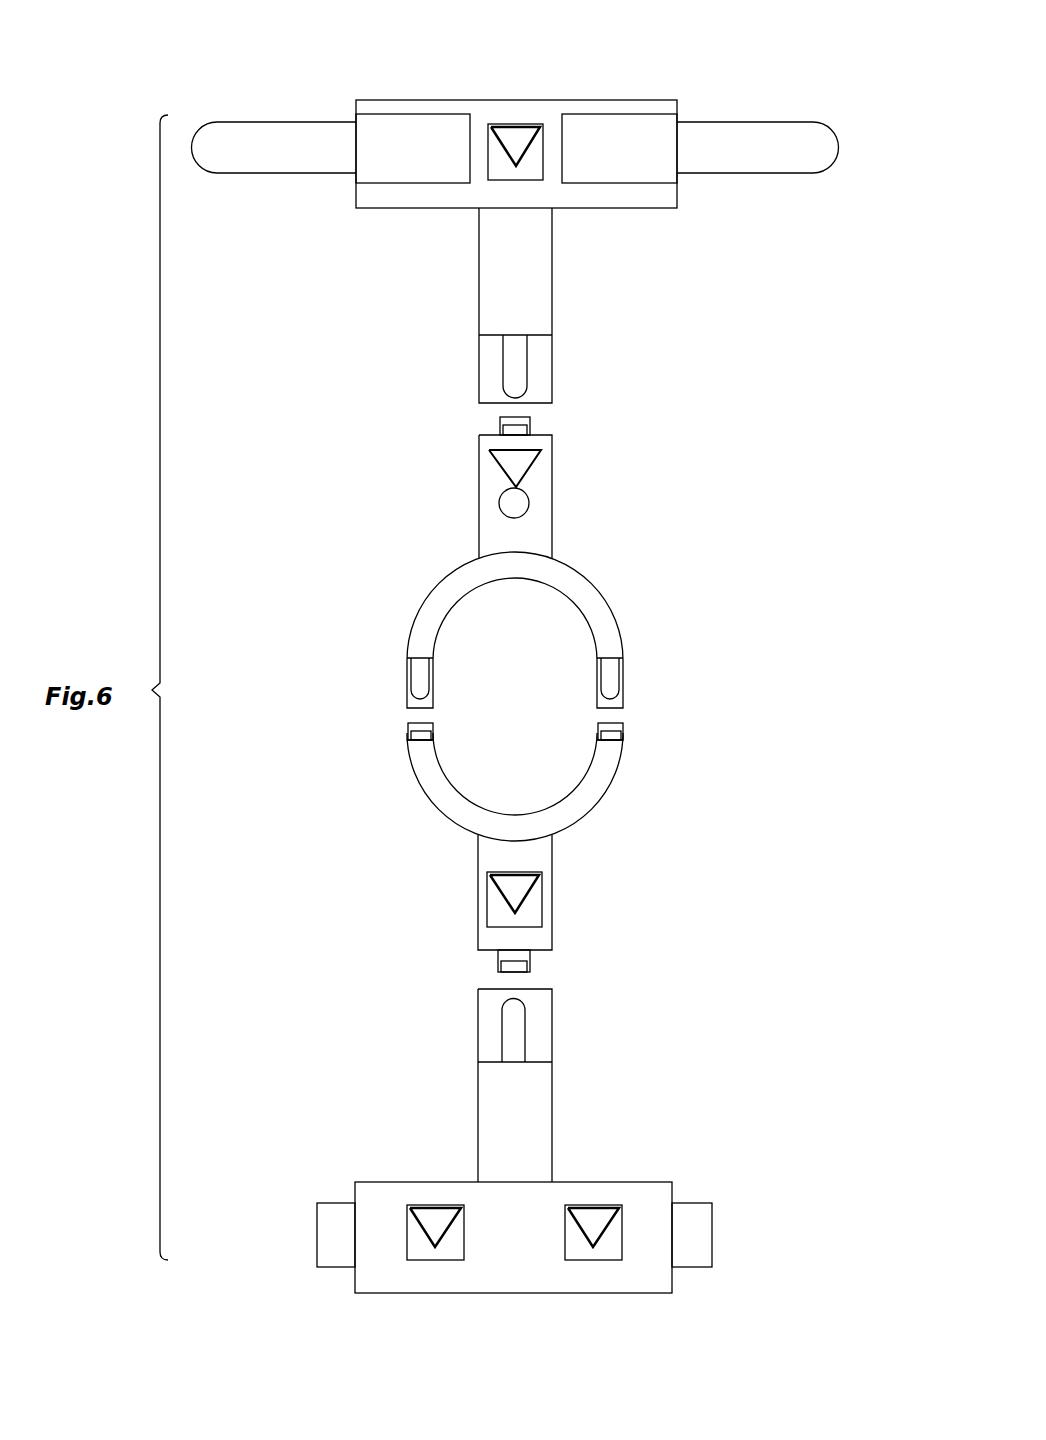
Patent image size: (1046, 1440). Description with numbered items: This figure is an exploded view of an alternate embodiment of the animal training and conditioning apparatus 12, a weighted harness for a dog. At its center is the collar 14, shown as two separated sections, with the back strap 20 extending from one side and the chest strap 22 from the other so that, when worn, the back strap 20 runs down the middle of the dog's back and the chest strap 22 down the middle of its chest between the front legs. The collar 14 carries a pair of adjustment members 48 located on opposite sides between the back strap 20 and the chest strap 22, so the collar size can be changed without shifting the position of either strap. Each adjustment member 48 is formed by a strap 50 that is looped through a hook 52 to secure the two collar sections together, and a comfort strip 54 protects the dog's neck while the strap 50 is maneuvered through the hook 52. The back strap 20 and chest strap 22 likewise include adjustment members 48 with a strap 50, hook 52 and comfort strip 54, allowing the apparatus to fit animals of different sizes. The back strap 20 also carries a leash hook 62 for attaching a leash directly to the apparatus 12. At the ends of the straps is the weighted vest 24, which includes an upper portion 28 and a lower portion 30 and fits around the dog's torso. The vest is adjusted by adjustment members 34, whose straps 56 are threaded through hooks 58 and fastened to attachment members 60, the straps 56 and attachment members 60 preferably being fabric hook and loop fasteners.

The animal training and conditioning apparatus 12 is at (706, 438).
The collar 14 is at (596, 608).
The back strap 20 is at (541, 263).
The chest strap 22 is at (538, 855).
The weighted vest 24 is at (497, 100).
The upper portion 28 is at (568, 100).
The lower portion 30 is at (617, 1283).
The adjustment members 34 is at (283, 122).
The adjustment members 48 is at (548, 375).
The strap 50 is at (497, 365).
The hook 52 is at (497, 420).
The comfort strip 54 is at (485, 385).
The straps 56 is at (202, 160).
The hooks 58 is at (336, 1203).
The attachment members 60 is at (393, 124).
The leash hook 62 is at (527, 485).